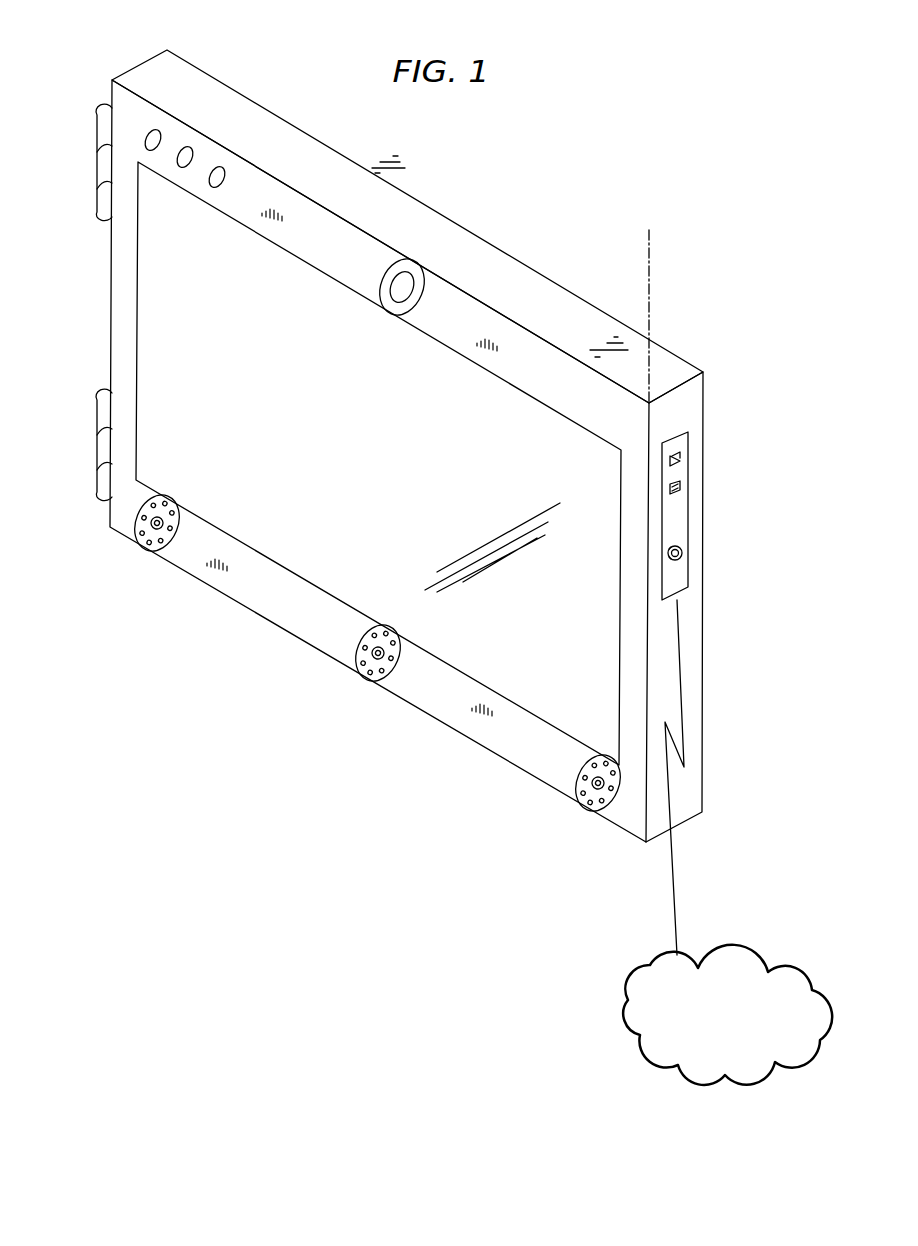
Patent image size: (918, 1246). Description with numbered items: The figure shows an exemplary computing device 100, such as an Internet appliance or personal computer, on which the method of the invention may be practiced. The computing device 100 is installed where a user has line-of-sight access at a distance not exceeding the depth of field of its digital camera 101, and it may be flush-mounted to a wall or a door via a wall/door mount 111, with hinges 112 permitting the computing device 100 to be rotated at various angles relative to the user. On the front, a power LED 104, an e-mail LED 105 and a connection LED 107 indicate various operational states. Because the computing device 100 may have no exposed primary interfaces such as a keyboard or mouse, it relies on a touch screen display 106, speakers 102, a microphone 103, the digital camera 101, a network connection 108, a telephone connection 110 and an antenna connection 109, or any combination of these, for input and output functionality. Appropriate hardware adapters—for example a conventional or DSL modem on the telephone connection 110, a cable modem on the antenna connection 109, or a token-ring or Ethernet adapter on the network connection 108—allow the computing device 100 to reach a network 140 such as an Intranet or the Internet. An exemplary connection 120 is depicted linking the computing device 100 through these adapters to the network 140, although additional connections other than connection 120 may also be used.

The computing device 100 is at (572, 203).
The digital camera 101 is at (398, 258).
The speakers 102 is at (158, 541).
The microphone 103 is at (368, 670).
The power LED 104 is at (152, 130).
The e-mail LED 105 is at (186, 147).
The touch screen display 106 is at (317, 448).
The connection LED 107 is at (218, 167).
The network connection 108 is at (683, 461).
The antenna connection 109 is at (683, 555).
The telephone connection 110 is at (683, 489).
The wall/door mount 111 is at (650, 288).
The hinges 112 is at (97, 133).
The connection 120 is at (677, 925).
The network 140 is at (626, 1005).